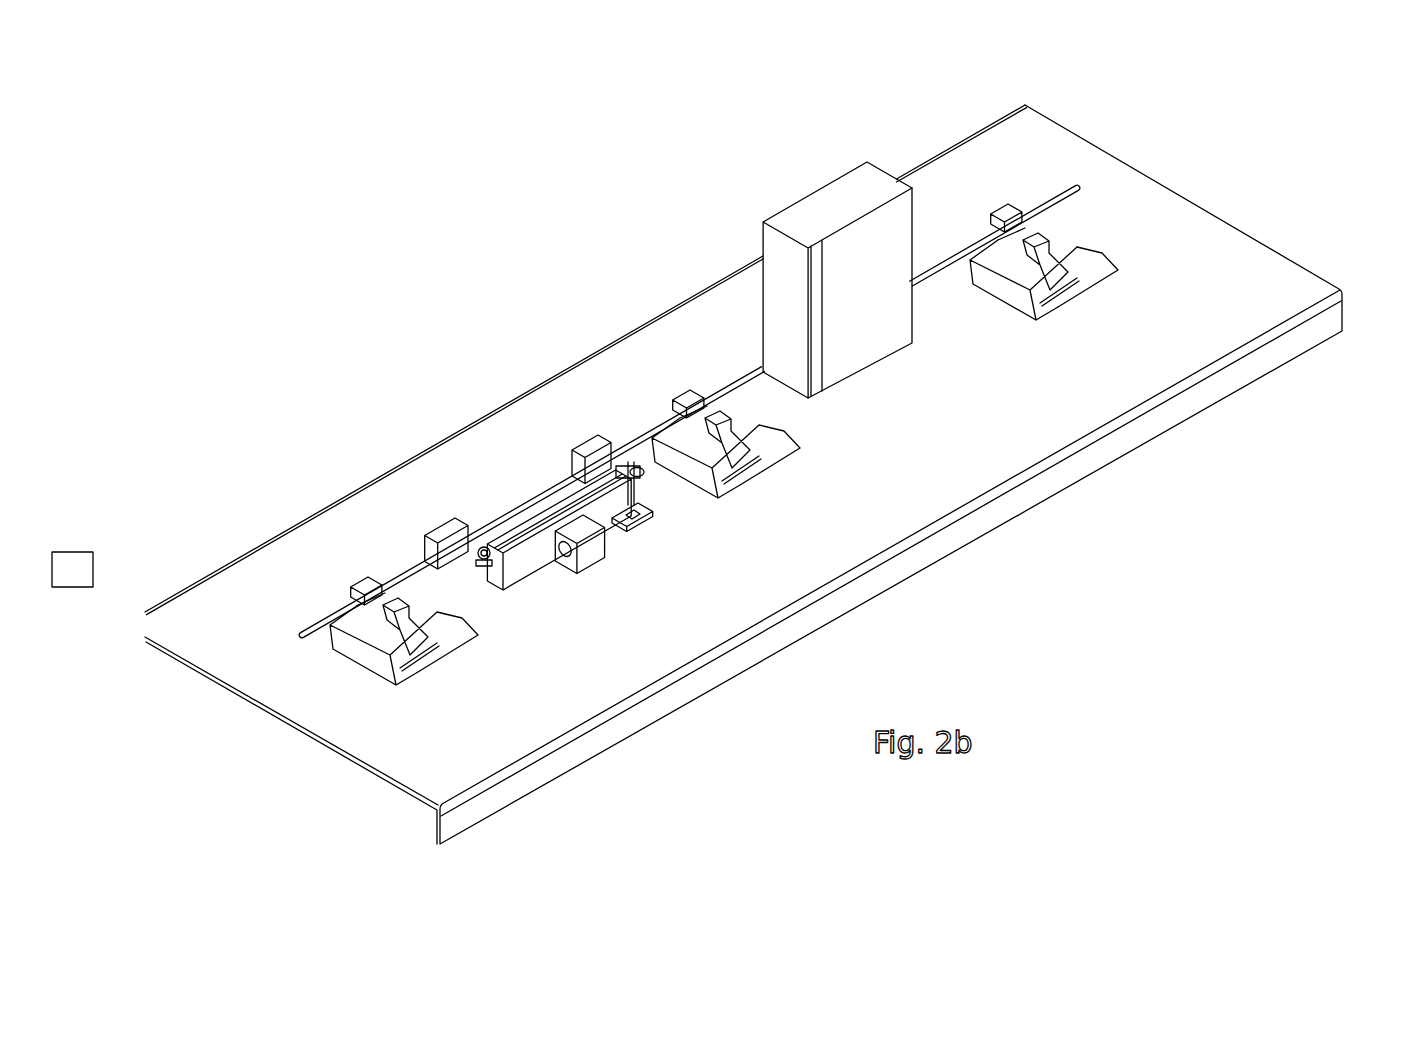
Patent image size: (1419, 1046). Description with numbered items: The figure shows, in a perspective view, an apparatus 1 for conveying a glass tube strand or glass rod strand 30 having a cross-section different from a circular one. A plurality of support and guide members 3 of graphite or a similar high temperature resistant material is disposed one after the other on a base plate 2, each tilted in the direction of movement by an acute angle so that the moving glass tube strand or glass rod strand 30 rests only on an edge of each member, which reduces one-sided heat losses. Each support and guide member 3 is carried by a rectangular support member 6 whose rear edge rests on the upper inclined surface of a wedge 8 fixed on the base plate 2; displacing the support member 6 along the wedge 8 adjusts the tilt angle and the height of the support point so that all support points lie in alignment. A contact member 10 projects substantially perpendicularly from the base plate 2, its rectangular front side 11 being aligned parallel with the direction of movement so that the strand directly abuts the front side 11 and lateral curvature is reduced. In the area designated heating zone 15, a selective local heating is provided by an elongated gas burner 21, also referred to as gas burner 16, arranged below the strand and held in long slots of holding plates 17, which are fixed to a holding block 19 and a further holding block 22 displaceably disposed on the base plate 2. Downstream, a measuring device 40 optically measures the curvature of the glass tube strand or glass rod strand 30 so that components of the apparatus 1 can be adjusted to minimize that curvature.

The apparatus 1 is at (300, 155).
The base plate 2 is at (1280, 273).
The support and guide member 3 is at (362, 577).
The support member 6 is at (1077, 253).
The wedge 8 is at (1107, 262).
The contact member 10 is at (868, 252).
The front side 11 is at (890, 237).
The heating zone 15 is at (539, 457).
The gas burner 16 is at (485, 547).
The holding plate 17 is at (625, 448).
The holding block 19 is at (443, 518).
The gas burner 21 is at (520, 570).
The holding block 22 is at (592, 563).
The glass tube strand or glass rod strand 30 is at (1067, 190).
The measuring device 40 is at (73, 558).